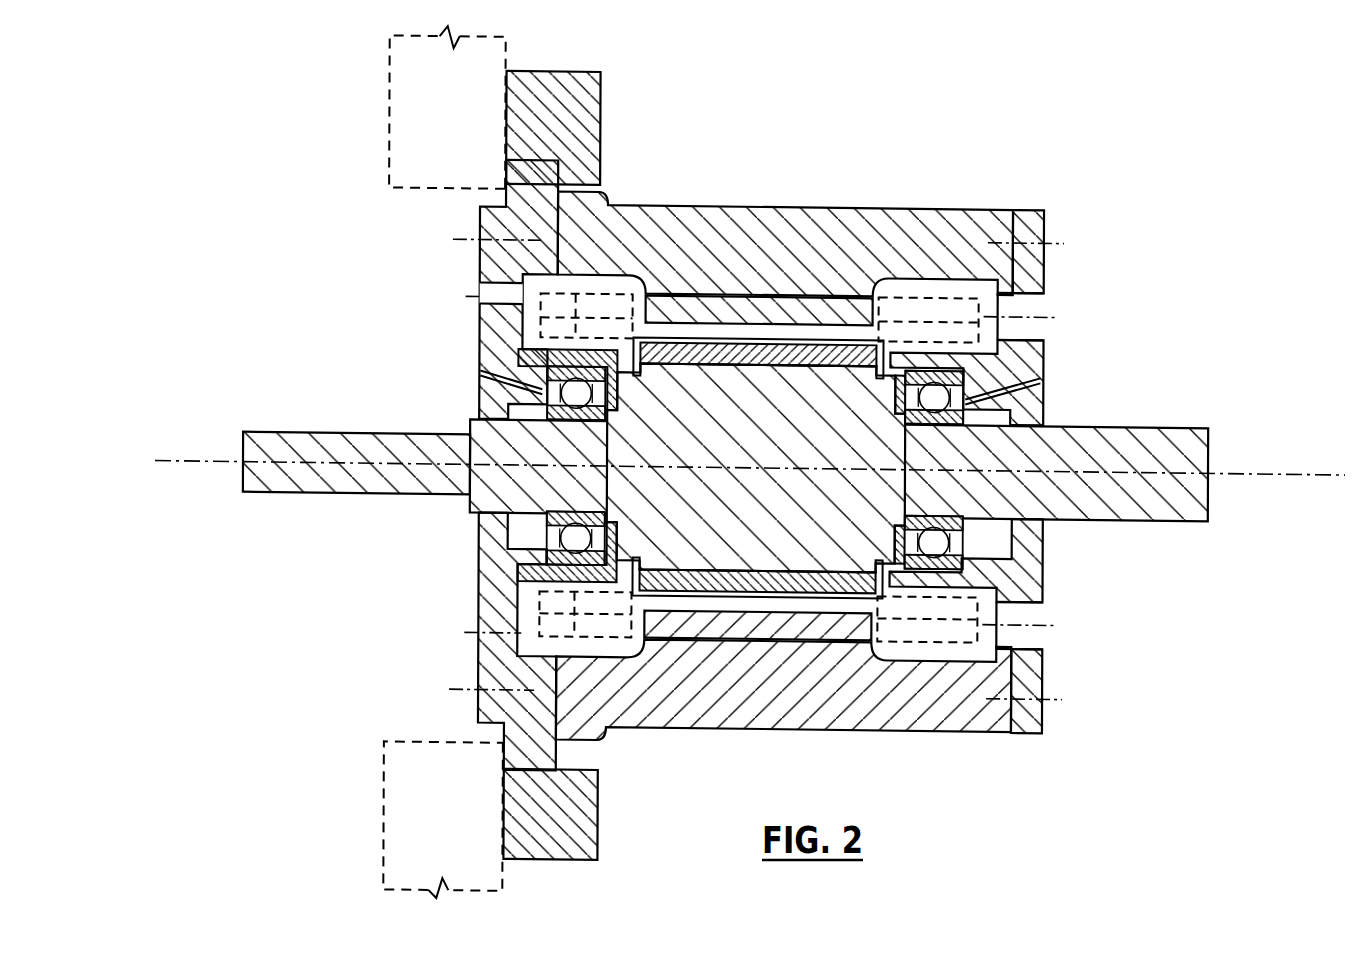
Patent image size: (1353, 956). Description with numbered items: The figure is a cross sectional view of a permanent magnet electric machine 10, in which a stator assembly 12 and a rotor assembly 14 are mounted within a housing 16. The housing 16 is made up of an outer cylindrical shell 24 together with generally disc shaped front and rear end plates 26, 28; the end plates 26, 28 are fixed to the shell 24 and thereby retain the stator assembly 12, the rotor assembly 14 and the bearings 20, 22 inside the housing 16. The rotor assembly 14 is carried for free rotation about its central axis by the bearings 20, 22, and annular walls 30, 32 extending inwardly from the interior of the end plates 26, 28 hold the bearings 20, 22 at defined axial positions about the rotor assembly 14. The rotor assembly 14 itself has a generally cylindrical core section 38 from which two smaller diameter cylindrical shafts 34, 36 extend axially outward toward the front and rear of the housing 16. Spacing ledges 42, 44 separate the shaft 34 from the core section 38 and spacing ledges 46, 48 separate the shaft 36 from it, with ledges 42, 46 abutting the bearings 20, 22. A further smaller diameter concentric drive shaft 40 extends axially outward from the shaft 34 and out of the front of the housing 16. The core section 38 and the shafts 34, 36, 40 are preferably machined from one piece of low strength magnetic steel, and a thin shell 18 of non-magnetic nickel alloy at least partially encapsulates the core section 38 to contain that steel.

The permanent magnet electric machine 10 is at (1026, 147).
The stator assembly 12 is at (706, 298).
The rotor assembly 14 is at (751, 431).
The housing 16 is at (930, 708).
The thin shell 18 is at (736, 355).
The bearing 20 is at (925, 420).
The bearing 22 is at (605, 419).
The outer cylindrical shell 24 is at (842, 250).
The front end plate 26 is at (478, 659).
The rear end plate 28 is at (1030, 572).
The annular wall 30 is at (637, 374).
The annular wall 32 is at (888, 398).
The shaft 34 is at (529, 502).
The shaft 36 is at (1102, 495).
The core section 38 is at (734, 501).
The drive shaft 40 is at (286, 443).
The spacing ledge 42 is at (613, 512).
The spacing ledge 44 is at (625, 536).
The spacing ledge 46 is at (903, 525).
The spacing ledge 48 is at (886, 552).